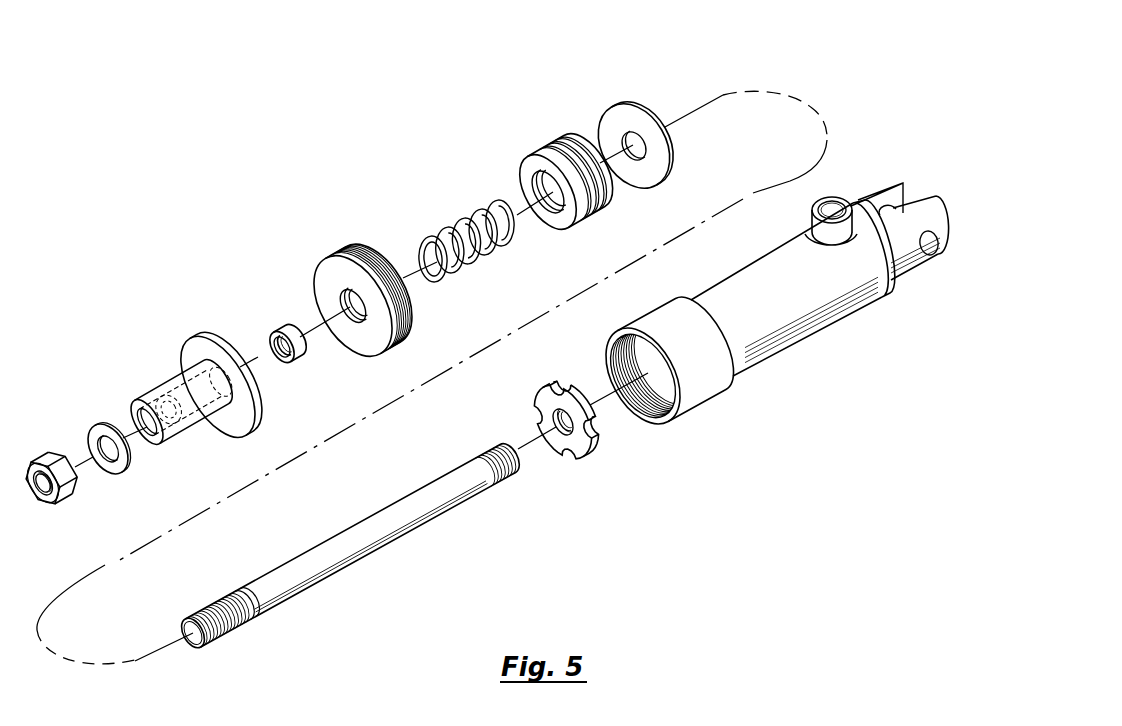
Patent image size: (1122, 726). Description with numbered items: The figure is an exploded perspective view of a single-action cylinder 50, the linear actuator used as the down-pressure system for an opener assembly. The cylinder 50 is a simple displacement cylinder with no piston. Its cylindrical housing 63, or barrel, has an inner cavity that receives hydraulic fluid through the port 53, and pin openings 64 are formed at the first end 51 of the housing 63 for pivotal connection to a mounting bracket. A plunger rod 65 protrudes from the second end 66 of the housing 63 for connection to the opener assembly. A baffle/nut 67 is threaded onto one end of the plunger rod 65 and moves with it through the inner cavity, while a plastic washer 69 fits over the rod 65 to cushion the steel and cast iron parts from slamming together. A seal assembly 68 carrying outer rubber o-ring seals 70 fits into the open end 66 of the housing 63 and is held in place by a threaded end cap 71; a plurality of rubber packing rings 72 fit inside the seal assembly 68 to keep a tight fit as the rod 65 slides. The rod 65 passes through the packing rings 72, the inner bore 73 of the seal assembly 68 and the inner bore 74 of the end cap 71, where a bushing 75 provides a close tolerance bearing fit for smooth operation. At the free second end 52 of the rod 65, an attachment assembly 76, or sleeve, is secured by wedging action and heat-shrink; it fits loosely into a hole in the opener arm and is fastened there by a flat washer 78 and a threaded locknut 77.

The single-action cylinder 50 is at (293, 182).
The first end 51 is at (920, 207).
The second end 52 is at (224, 632).
The port 53 is at (830, 198).
The cylindrical housing 63 is at (792, 310).
The pin openings 64 is at (930, 260).
The plunger rod 65 is at (380, 538).
The second end 66 is at (666, 430).
The baffle/nut 67 is at (575, 458).
The seal assembly 68 is at (535, 160).
The plastic washer 69 is at (613, 107).
The outer rubber o-ring seals 70 is at (577, 142).
The threaded end cap 71 is at (343, 258).
The packing rings 72 is at (455, 216).
The inner bore 73 is at (548, 188).
The inner bore 74 is at (340, 296).
The bushing 75 is at (276, 328).
The attachment assembly 76 is at (168, 392).
The threaded locknut 77 is at (46, 452).
The flat washer 78 is at (100, 425).